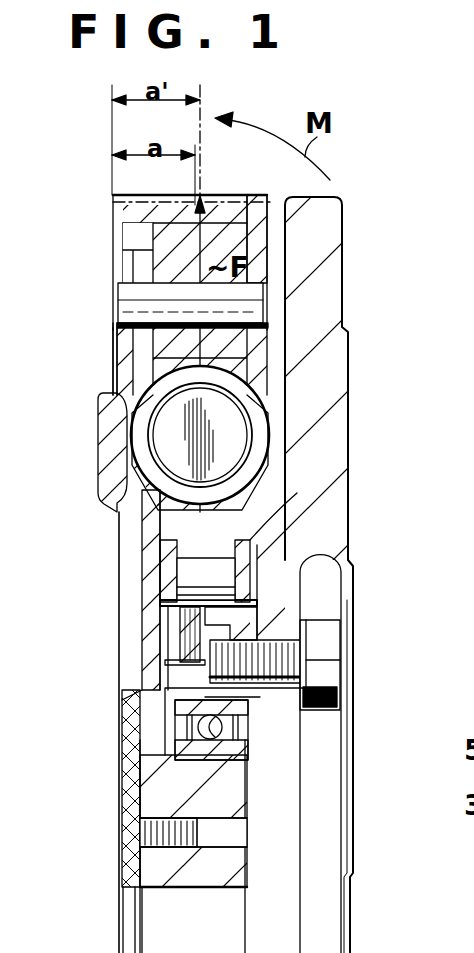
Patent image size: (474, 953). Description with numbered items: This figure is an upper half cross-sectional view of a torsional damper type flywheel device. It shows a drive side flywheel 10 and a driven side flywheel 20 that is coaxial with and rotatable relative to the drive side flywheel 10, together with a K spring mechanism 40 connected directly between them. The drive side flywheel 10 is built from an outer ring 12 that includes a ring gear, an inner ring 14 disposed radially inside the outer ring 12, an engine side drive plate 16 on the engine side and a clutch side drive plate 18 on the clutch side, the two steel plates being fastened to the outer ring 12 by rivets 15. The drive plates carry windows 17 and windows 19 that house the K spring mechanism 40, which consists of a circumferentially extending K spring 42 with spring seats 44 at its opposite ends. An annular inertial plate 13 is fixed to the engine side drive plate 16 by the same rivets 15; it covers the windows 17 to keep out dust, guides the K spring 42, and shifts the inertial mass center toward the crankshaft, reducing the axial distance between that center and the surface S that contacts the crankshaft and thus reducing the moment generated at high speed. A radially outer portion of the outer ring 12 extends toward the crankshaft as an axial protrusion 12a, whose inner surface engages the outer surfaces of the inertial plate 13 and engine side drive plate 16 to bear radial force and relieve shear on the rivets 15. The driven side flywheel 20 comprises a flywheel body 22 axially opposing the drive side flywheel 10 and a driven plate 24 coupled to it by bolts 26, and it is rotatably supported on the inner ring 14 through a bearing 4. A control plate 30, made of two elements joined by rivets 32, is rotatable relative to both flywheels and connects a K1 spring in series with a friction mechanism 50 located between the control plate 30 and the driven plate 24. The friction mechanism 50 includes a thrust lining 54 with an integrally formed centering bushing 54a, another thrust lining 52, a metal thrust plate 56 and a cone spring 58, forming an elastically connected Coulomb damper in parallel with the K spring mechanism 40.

The drive side flywheel 10 is at (112, 208).
The outer ring 12 is at (213, 233).
The axial protrusion 12a is at (128, 200).
The annular inertial plate 13 is at (123, 353).
The inner ring 14 is at (150, 875).
The rivets 15 is at (118, 294).
The engine side drive plate 16 is at (117, 241).
The windows 17 is at (113, 397).
The clutch side drive plate 18 is at (256, 200).
The windows 19 is at (270, 397).
The driven side flywheel 20 is at (343, 207).
The flywheel body 22 is at (328, 308).
The driven plate 24 is at (255, 495).
The bolts 26 is at (353, 650).
The control plate 30 is at (135, 530).
The rivets 32 is at (202, 572).
The K spring mechanism 40 is at (277, 420).
The K spring 42 is at (270, 468).
The spring seats 44 is at (180, 447).
The friction mechanism 50 is at (295, 614).
The thrust lining 52 is at (175, 625).
The thrust lining 54 is at (270, 593).
The centering bushing 54a is at (320, 667).
The thrust plate 56 is at (178, 648).
The cone spring 58 is at (150, 660).
The bearing 4 is at (226, 724).
The surface S is at (120, 792).